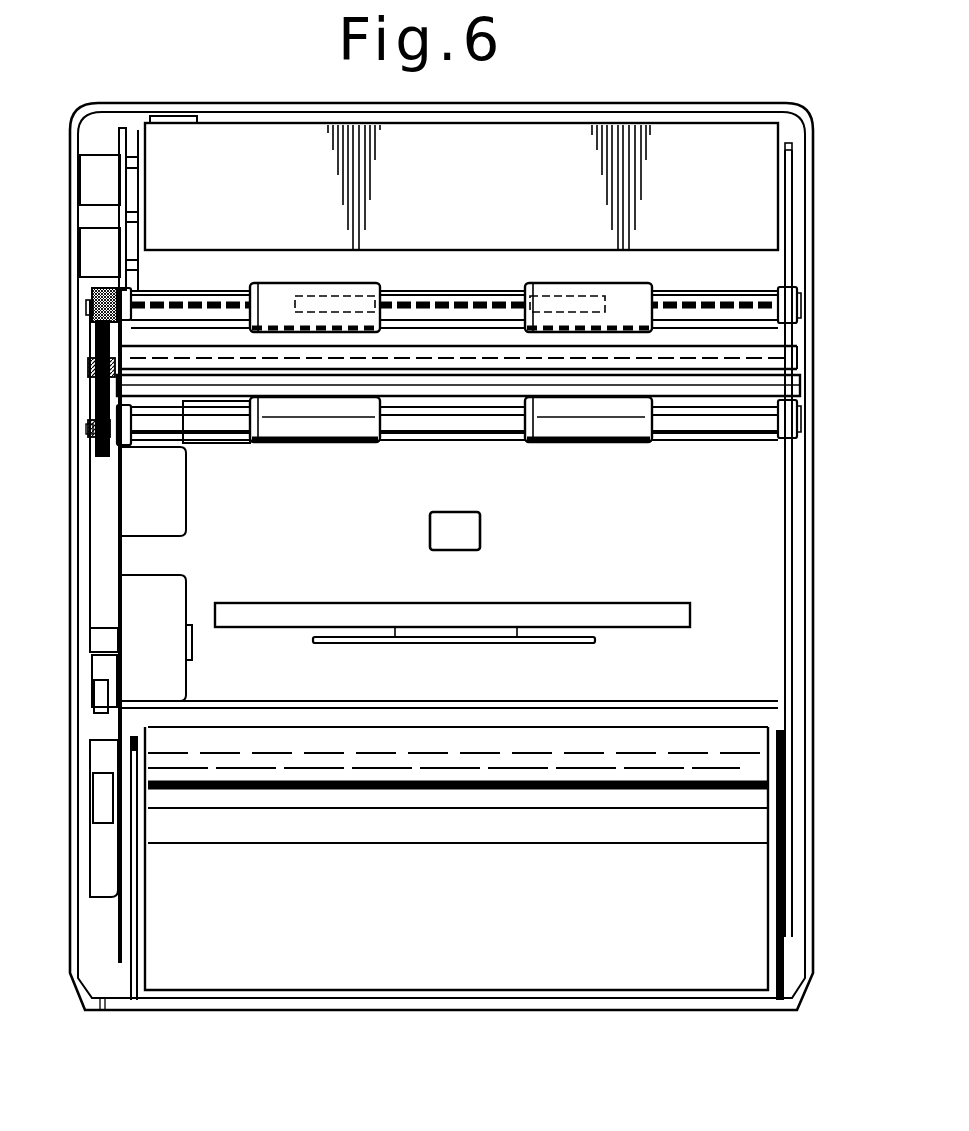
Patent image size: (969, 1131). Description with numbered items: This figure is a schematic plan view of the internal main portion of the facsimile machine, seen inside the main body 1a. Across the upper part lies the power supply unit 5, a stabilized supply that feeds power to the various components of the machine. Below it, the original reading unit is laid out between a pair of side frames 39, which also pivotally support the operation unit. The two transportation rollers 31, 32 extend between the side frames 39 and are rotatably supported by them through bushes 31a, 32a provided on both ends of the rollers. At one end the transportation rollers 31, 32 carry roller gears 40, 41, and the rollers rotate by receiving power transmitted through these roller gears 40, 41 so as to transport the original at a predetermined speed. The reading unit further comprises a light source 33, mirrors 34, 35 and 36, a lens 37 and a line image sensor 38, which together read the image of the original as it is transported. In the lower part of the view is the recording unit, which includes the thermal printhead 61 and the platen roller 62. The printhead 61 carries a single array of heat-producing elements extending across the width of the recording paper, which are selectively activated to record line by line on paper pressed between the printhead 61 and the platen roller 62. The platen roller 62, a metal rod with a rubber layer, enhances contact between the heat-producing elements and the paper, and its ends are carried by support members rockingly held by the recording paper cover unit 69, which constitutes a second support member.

The main body 1a is at (806, 108).
The power supply unit 5 is at (452, 192).
The transportation roller 31 is at (601, 443).
The bush 31a is at (124, 447).
The transportation roller 32 is at (613, 300).
The bush 32a is at (133, 304).
The light source 33 is at (780, 382).
The mirror 34 is at (778, 344).
The mirror 35 is at (688, 603).
The mirror 36 is at (441, 300).
The lens 37 is at (473, 533).
The line image sensor 38 is at (502, 643).
The side frame 39 is at (120, 543).
The roller gear 40 is at (95, 444).
The roller gear 41 is at (92, 322).
The thermal printhead 61 is at (368, 722).
The platen roller 62 is at (369, 790).
The recording paper cover unit 69 is at (483, 965).